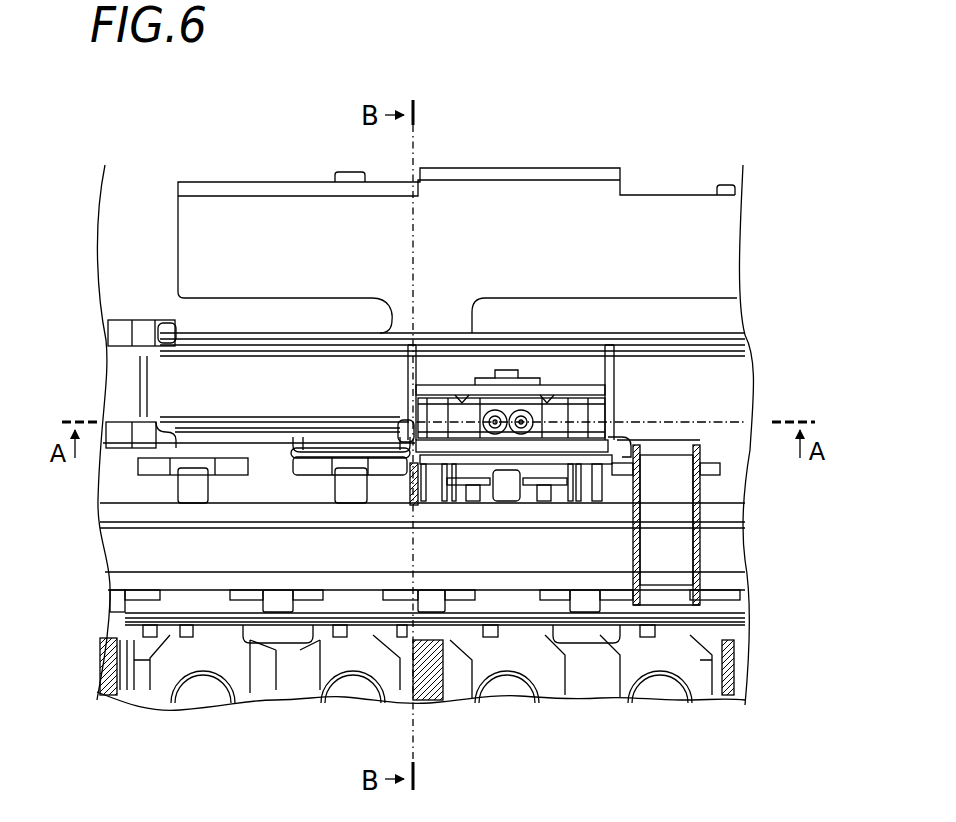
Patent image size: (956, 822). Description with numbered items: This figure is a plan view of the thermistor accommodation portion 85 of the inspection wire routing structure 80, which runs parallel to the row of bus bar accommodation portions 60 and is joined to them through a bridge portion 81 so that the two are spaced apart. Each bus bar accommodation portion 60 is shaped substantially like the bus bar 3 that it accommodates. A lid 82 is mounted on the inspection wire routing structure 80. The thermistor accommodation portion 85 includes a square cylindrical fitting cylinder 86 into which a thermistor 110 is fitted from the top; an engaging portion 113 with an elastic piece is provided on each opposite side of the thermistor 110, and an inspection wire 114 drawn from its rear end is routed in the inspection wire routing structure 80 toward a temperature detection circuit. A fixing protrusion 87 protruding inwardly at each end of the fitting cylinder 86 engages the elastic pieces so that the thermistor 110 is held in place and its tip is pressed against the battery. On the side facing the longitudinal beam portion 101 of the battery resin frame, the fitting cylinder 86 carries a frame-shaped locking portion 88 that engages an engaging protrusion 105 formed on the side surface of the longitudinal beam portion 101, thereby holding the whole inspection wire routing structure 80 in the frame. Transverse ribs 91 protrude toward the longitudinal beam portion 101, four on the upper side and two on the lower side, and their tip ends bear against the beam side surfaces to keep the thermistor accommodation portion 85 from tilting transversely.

The bus bar 3 is at (248, 695).
The bus bar accommodation portion 60 is at (278, 682).
The inspection wire routing structure 80 is at (760, 352).
The bridge portion 81 is at (667, 544).
The lid 82 is at (300, 240).
The thermistor accommodation portion 85 is at (582, 366).
The fitting cylinder 86 is at (600, 335).
The fixing protrusion 87 is at (400, 418).
The locking portion 88 is at (505, 502).
The transverse rib 91 is at (421, 502).
The longitudinal beam portion 101 is at (133, 542).
The engaging protrusion 105 is at (482, 502).
The thermistor 110 is at (570, 302).
The engaging portion 113 is at (460, 405).
The inspection wire 114 is at (505, 385).